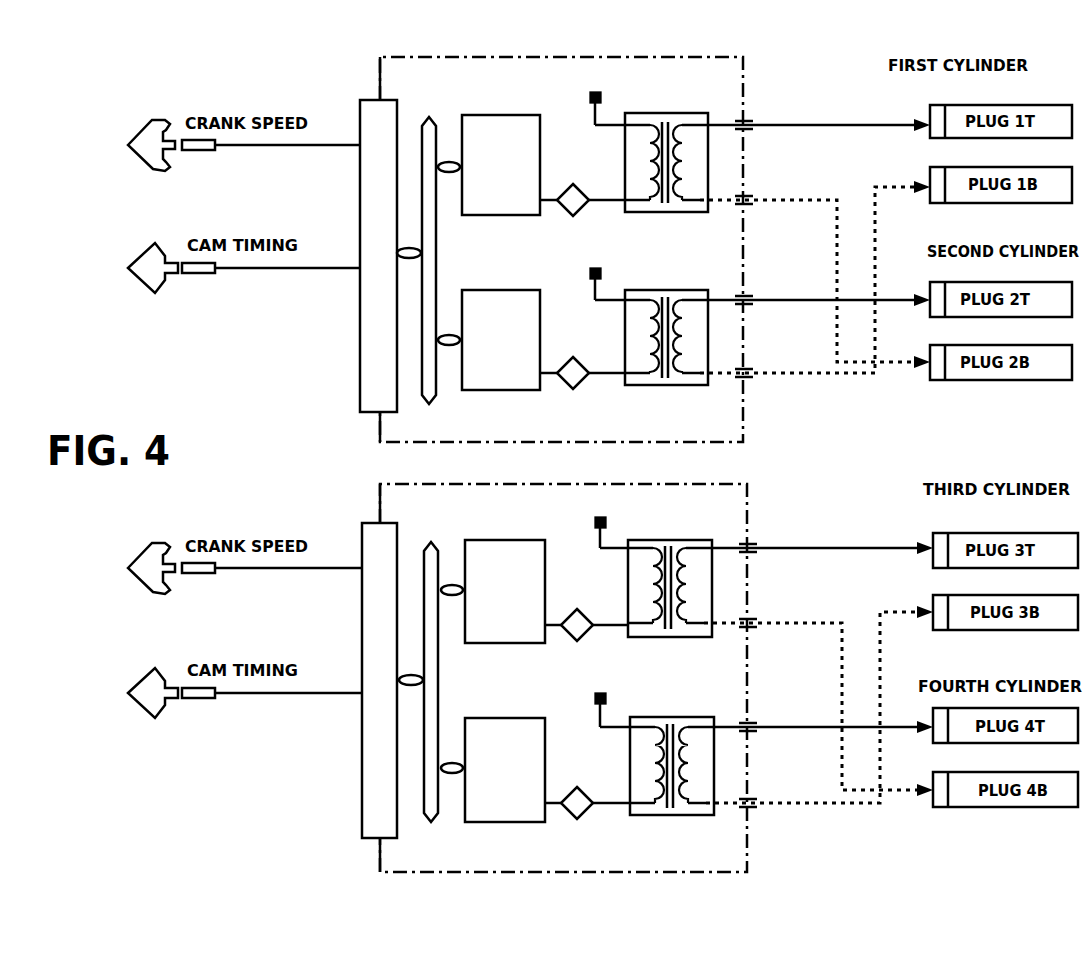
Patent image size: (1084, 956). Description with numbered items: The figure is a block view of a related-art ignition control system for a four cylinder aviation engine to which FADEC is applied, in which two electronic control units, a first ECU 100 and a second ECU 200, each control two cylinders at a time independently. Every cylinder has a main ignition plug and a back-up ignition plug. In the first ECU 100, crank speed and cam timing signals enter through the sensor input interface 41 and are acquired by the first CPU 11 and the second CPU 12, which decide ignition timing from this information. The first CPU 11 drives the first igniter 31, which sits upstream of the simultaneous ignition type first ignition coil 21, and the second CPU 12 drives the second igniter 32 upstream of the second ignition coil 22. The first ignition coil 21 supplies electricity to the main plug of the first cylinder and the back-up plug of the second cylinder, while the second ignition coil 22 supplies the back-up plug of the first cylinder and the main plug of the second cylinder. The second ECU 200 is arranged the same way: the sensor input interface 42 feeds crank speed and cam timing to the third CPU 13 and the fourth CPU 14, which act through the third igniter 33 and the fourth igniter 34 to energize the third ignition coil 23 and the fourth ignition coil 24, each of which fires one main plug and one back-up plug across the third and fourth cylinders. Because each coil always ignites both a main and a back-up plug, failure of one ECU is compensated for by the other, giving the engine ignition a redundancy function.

The first ECU 100 is at (610, 57).
The second ECU 200 is at (617, 872).
The first CPU 11 is at (486, 115).
The second CPU 12 is at (486, 290).
The third CPU 13 is at (490, 540).
The fourth CPU 14 is at (490, 718).
The first ignition coil 21 is at (650, 113).
The second ignition coil 22 is at (650, 290).
The third ignition coil 23 is at (655, 540).
The fourth ignition coil 24 is at (657, 717).
The first igniter 31 is at (565, 184).
The second igniter 32 is at (565, 357).
The third igniter 33 is at (570, 609).
The fourth igniter 34 is at (570, 787).
The sensor input interface 41 is at (368, 100).
The sensor input interface 42 is at (370, 523).